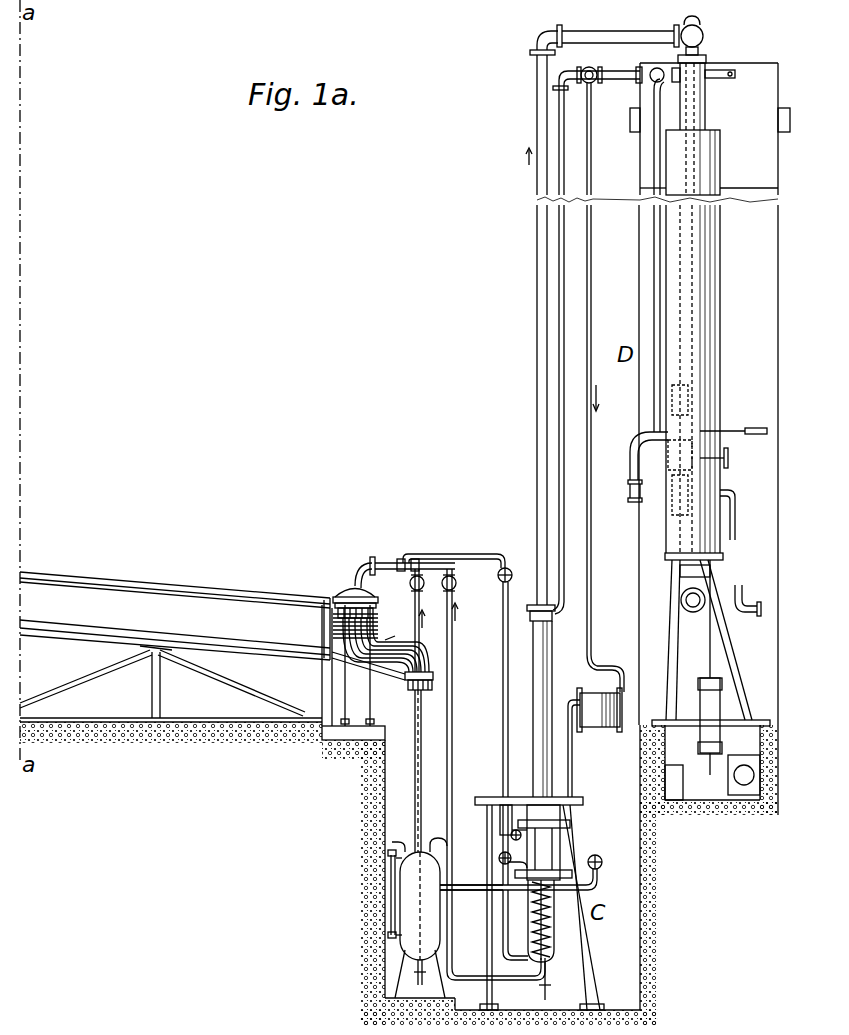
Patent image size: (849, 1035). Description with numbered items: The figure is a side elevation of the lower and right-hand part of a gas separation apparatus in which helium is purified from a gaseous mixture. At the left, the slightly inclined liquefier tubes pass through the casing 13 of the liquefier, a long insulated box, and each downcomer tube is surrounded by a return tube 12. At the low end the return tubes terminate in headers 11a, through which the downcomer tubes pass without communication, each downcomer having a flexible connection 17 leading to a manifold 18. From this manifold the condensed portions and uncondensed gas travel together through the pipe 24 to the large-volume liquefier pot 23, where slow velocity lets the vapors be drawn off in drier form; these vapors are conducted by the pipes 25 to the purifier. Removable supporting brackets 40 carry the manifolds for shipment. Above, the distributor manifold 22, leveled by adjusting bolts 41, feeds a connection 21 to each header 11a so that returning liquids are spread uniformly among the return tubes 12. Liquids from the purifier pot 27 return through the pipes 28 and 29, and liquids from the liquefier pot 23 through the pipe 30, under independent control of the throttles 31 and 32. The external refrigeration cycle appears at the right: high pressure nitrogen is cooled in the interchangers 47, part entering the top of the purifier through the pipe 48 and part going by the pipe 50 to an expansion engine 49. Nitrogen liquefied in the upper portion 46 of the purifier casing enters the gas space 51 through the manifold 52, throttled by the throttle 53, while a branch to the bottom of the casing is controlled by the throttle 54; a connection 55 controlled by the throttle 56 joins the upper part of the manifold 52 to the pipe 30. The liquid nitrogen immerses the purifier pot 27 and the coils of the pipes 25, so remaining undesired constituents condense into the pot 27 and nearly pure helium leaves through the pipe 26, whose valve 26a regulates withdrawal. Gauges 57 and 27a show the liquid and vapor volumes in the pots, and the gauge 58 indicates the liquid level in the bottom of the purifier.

The headers or junction blocks 11a is at (385, 626).
The return tube 12 is at (320, 614).
The casing of the liquefier 13 is at (175, 657).
The connection 17 is at (405, 647).
The manifold 18 is at (433, 685).
The connection 21 is at (338, 596).
The distributor manifold 22 is at (352, 588).
The liquefier pot 23 is at (412, 905).
The pipe 24 is at (415, 768).
The pipes 25 is at (468, 892).
The pipe 26 is at (595, 882).
The valve 26a is at (603, 864).
The purifier pot 27 is at (548, 942).
The gauge 27a is at (560, 946).
The pipe 28 is at (447, 748).
The pipe 29 is at (413, 615).
The pipe 30 is at (378, 568).
The throttle 31 is at (456, 585).
The throttle 32 is at (410, 583).
The supporting brackets 40 is at (322, 668).
The adjusting bolts 41 is at (347, 672).
The upper portion of the purifier casing 46 is at (536, 702).
The interchangers 47 is at (722, 336).
The pipe 48 is at (561, 418).
The expansion engine 49 is at (590, 722).
The pipe 50 is at (592, 533).
The gas space or section 51 is at (550, 848).
The manifold 52 is at (500, 812).
The throttle 53 is at (511, 836).
The throttle 54 is at (499, 858).
The connection 55 is at (503, 657).
The throttle 56 is at (508, 568).
The gauge 57 is at (398, 887).
The gauge 58 is at (504, 874).